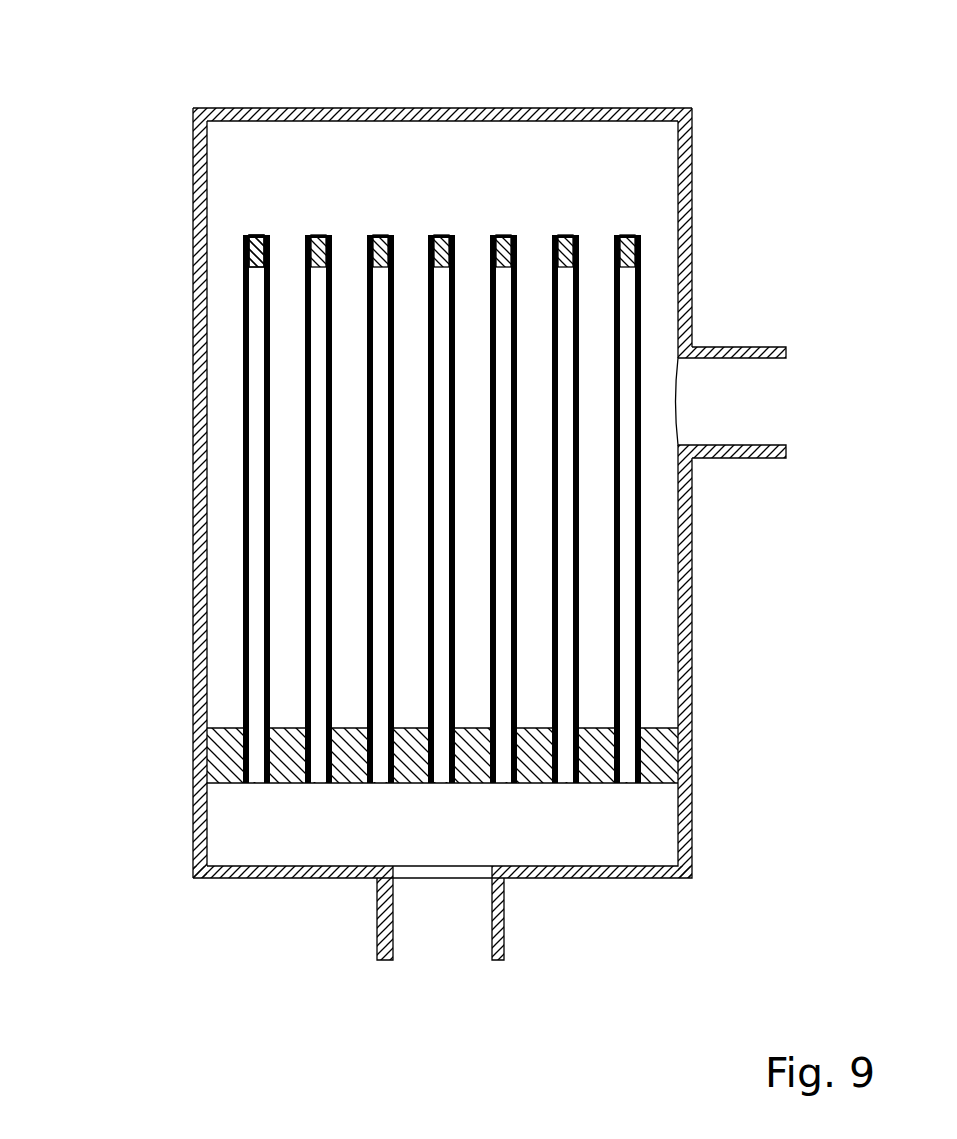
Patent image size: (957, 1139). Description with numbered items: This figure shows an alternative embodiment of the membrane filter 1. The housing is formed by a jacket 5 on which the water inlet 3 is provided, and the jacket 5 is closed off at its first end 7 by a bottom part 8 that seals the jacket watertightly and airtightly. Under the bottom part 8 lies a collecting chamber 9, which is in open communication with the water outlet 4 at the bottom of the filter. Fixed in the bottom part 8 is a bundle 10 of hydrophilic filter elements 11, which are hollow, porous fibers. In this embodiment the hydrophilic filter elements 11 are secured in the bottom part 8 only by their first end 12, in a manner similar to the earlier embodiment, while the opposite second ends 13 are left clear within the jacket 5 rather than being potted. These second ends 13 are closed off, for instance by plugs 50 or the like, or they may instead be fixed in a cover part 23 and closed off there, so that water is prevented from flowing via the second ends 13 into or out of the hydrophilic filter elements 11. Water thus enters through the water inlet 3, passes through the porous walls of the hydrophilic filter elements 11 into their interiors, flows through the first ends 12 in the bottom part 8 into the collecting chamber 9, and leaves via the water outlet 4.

The membrane filter 1 is at (434, 513).
The water inlet 3 is at (748, 405).
The water outlet 4 is at (440, 908).
The jacket 5 is at (492, 451).
The first end 7 is at (698, 813).
The bottom part 8 is at (658, 753).
The collecting chamber 9 is at (298, 828).
The bundle 10 is at (642, 298).
The hydrophilic filter elements 11 is at (315, 470).
The first end 12 is at (315, 751).
The second end 13 is at (257, 227).
The cover part 23 is at (588, 118).
The plugs 50 is at (247, 250).